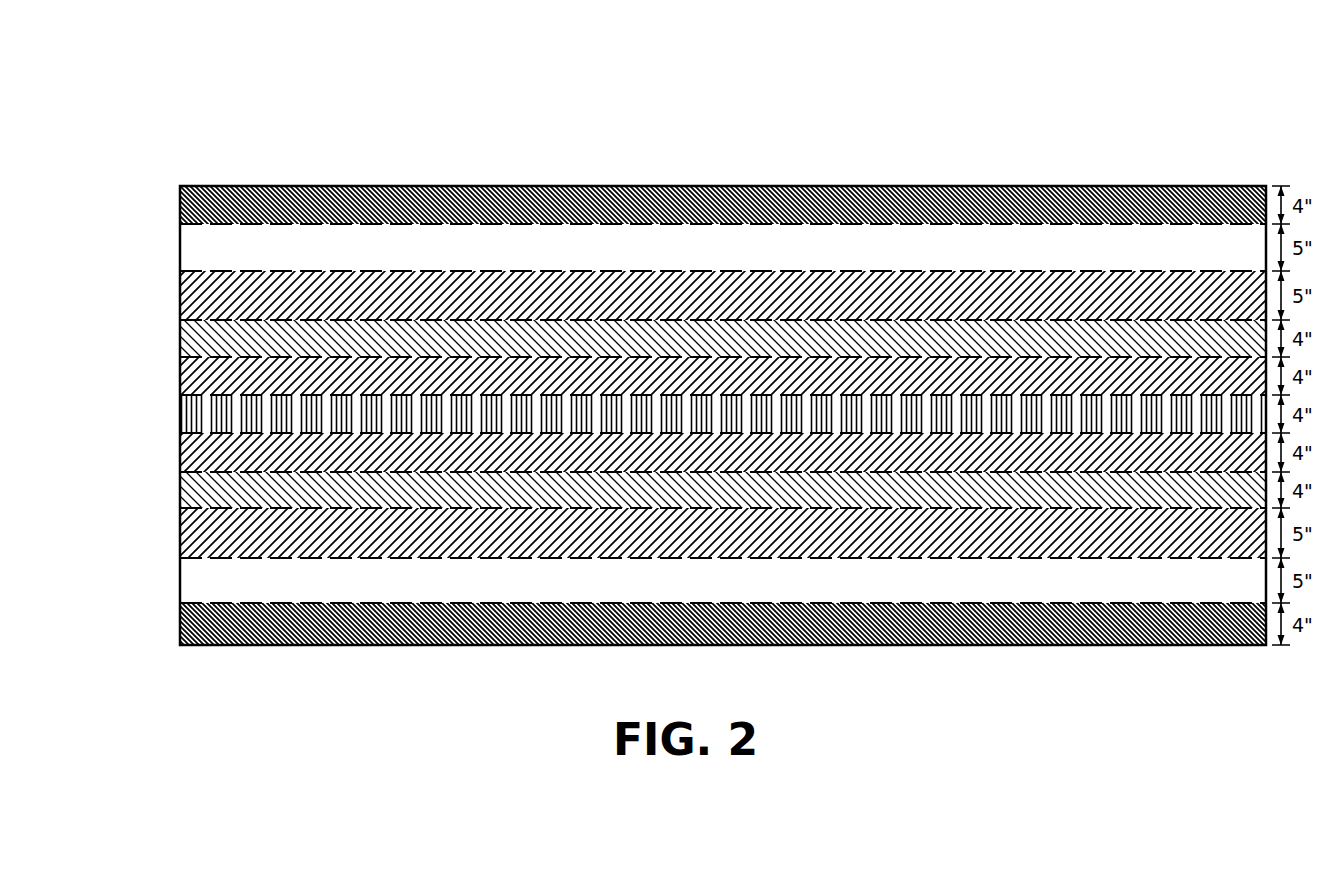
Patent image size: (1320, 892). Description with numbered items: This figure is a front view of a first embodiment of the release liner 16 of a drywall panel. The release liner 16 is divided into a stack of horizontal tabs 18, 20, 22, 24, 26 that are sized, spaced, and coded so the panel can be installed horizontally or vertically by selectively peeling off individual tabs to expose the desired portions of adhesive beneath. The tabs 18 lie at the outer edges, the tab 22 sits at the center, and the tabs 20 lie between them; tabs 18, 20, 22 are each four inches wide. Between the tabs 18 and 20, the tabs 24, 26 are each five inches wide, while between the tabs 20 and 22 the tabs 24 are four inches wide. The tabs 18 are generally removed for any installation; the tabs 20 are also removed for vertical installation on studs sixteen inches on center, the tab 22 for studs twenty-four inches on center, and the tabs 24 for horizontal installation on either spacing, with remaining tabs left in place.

The release liner 16 is at (248, 155).
The tabs 18 is at (205, 210).
The tabs 20 is at (205, 340).
The tab 22 is at (205, 414).
The tabs 24 is at (205, 296).
The tabs 26 is at (205, 253).